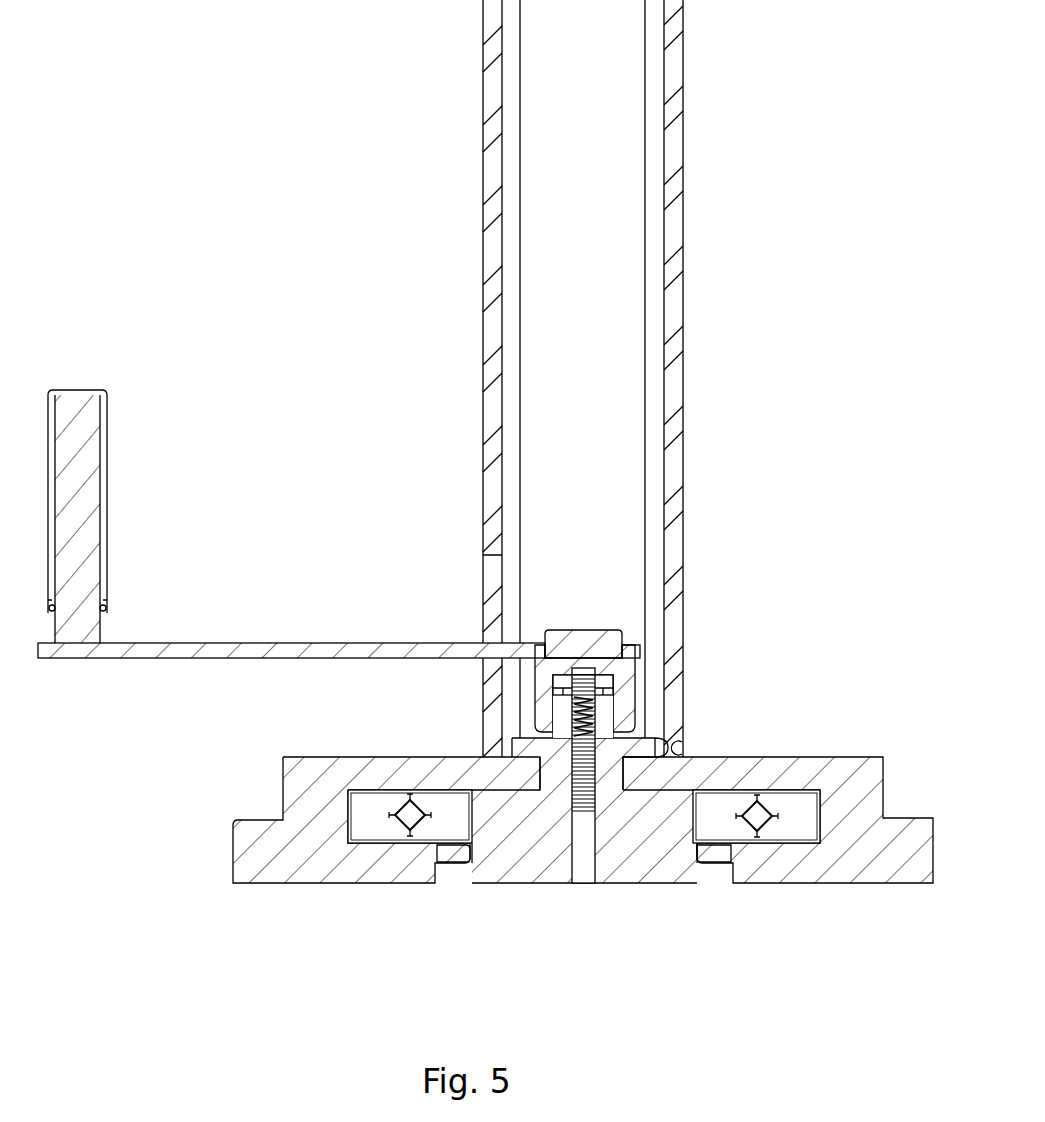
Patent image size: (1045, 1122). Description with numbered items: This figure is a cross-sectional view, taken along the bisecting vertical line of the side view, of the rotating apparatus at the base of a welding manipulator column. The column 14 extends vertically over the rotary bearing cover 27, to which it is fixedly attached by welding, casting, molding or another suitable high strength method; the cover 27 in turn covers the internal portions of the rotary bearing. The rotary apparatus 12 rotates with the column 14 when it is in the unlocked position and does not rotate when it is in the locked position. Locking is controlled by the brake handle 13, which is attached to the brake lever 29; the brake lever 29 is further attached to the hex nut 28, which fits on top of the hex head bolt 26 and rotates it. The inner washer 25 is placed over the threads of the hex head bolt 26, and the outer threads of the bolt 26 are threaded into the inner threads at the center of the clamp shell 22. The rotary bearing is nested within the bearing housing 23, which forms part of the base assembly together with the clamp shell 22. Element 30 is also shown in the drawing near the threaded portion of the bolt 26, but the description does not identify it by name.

The rotary apparatus 12 is at (797, 835).
The brake handle 13 is at (103, 440).
The column 14 is at (595, 215).
The clamp shell 22 is at (503, 860).
The bearing housing 23 is at (257, 860).
The inner washer 25 is at (513, 742).
The hex head bolt 26 is at (552, 710).
The rotary bearing cover 27 is at (730, 758).
The hex nut 28 is at (590, 643).
The brake lever 29 is at (187, 663).
The threaded bolt 30 is at (597, 722).